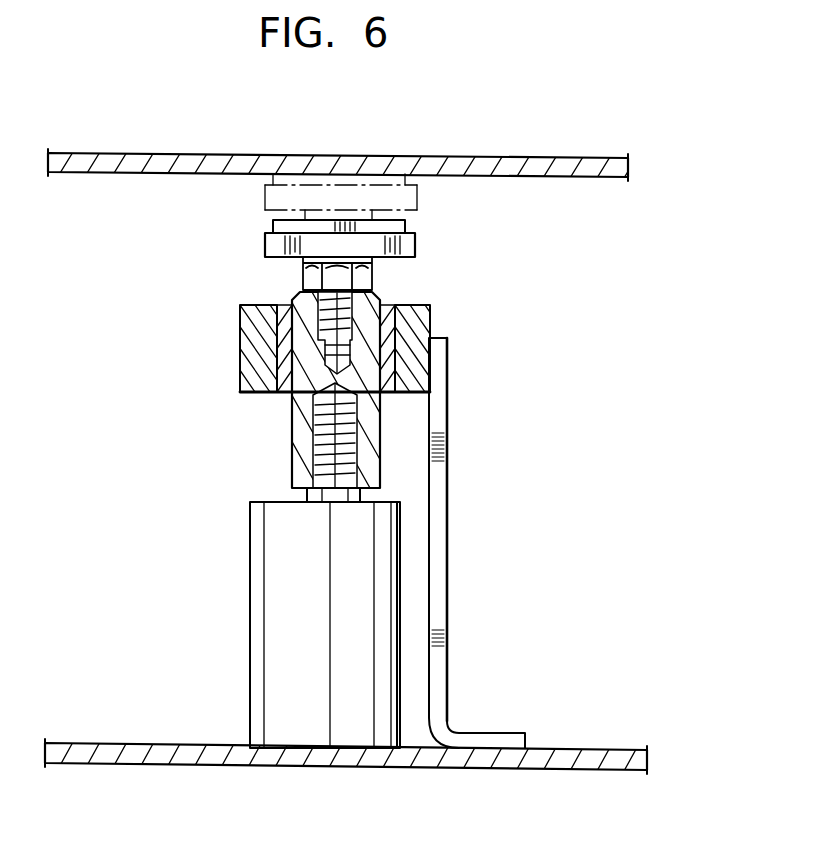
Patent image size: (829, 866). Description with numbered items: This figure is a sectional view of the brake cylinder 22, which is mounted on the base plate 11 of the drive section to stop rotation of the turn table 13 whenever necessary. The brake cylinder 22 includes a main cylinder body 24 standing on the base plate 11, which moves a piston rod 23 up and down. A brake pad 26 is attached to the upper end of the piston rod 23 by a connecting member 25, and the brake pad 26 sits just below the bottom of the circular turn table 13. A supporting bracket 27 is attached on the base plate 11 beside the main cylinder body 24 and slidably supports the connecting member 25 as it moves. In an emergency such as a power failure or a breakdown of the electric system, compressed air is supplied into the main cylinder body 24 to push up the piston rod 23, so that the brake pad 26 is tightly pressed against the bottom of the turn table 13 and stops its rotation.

The base plate 11 is at (188, 768).
The turn table 13 is at (562, 158).
The brake cylinder 22 is at (353, 520).
The piston rod 23 is at (307, 497).
The main cylinder body 24 is at (280, 672).
The connecting member 25 is at (290, 425).
The brake pad 26 is at (406, 226).
The supporting bracket 27 is at (448, 530).